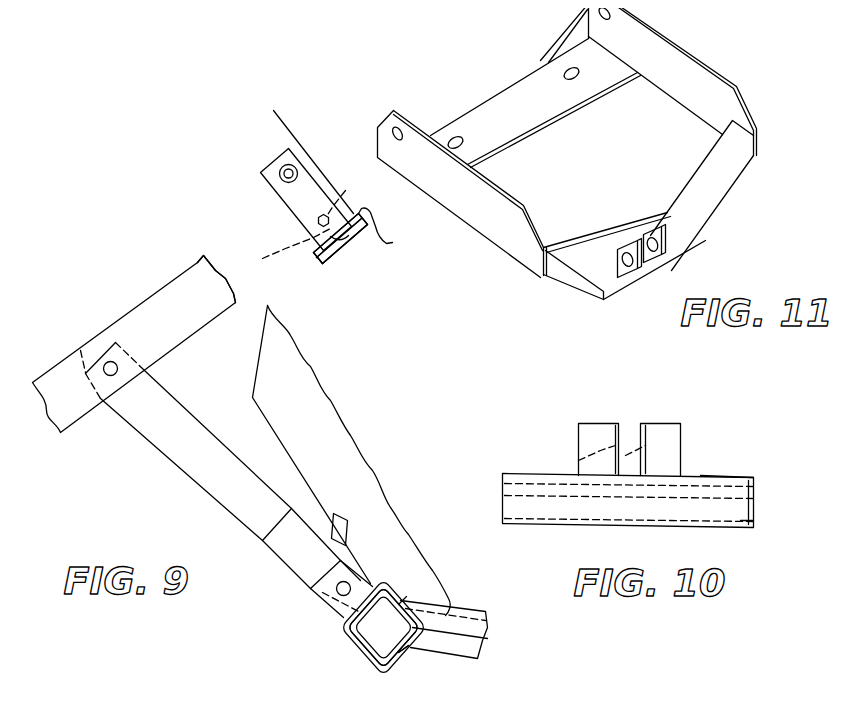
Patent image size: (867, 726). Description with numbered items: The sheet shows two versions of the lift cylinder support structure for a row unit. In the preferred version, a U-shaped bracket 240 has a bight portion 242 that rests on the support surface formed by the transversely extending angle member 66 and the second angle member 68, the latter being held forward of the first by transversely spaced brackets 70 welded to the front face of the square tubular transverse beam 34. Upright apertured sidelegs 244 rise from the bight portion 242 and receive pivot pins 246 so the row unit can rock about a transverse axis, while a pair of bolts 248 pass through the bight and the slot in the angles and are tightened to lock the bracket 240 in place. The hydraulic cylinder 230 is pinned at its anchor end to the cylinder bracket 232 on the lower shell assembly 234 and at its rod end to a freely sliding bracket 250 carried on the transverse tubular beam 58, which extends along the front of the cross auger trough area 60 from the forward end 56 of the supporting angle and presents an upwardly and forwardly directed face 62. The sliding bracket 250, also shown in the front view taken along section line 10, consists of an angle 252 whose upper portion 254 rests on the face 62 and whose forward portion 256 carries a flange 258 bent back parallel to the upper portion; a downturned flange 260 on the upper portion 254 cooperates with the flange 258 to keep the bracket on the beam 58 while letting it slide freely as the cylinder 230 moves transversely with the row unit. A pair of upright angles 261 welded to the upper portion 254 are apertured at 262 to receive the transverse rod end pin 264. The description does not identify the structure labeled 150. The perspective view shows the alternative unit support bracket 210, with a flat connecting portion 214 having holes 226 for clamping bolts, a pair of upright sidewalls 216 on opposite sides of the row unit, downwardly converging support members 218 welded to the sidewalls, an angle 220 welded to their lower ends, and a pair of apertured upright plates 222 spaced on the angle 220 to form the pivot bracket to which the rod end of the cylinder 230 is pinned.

In FIG. 9, the section line 10- 10 is at (283, 577).
In FIG. 9, the square tubular transverse beam 34 is at (393, 243).
In FIG. 9, the forward end 56 is at (405, 595).
In FIG. 9, the transverse tubular beam 58 is at (430, 636).
In FIG. 9, the cross auger trough area 60 is at (392, 457).
In FIG. 9, the upwardly and forwardly directed face 62 is at (413, 625).
In FIG. 9, the angle member 66 is at (366, 221).
In FIG. 9, the second angle member 68 is at (312, 258).
In FIG. 9, the brackets 70 is at (353, 250).
In FIG. 9, the rail 150 is at (252, 401).
In FIG. 11, the unit support bracket 210 is at (673, 24).
In FIG. 11, the flat connecting portion 214 is at (510, 82).
In FIG. 11, the upright sidewalls 216 is at (704, 86).
In FIG. 11, the support members 218 is at (733, 183).
In FIG. 11, the angle 220 is at (603, 258).
In FIG. 11, the apertured upright plates 222 is at (654, 265).
In FIG. 11, the holes 226 is at (569, 80).
In FIG. 9, the hydraulic cylinder 230 is at (181, 460).
In FIG. 9, the cylinder bracket 232 is at (108, 336).
In FIG. 9, the lower shell assembly 234 is at (260, 218).
In FIG. 9, the bracket 240 is at (342, 172).
In FIG. 9, the bight portion 242 is at (277, 251).
In FIG. 9, the upright apertured sidelegs 244 is at (311, 165).
In FIG. 9, the pivot pins 246 is at (288, 162).
In FIG. 9, the bolts 248 is at (353, 208).
In FIG. 9, the freely sliding bracket 250 is at (323, 652).
In FIG. 10, the freely sliding bracket 250 is at (562, 440).
In FIG. 9, the angle 252 is at (348, 629).
In FIG. 10, the angle 252 is at (502, 497).
In FIG. 9, the upper portion 254 is at (370, 583).
In FIG. 10, the upper portion 254 is at (698, 476).
In FIG. 10, the forward portion 256 is at (592, 518).
In FIG. 9, the flange 258 is at (412, 654).
In FIG. 10, the flange 258 is at (752, 518).
In FIG. 9, the downturned flange 260 is at (386, 593).
In FIG. 10, the downturned flange 260 is at (750, 490).
In FIG. 9, the upright angles 261 is at (343, 507).
In FIG. 10, the upright angles 261 is at (665, 422).
In FIG. 10, the apertures 262 is at (578, 460).
In FIG. 9, the transverse rod end pin 264 is at (336, 588).